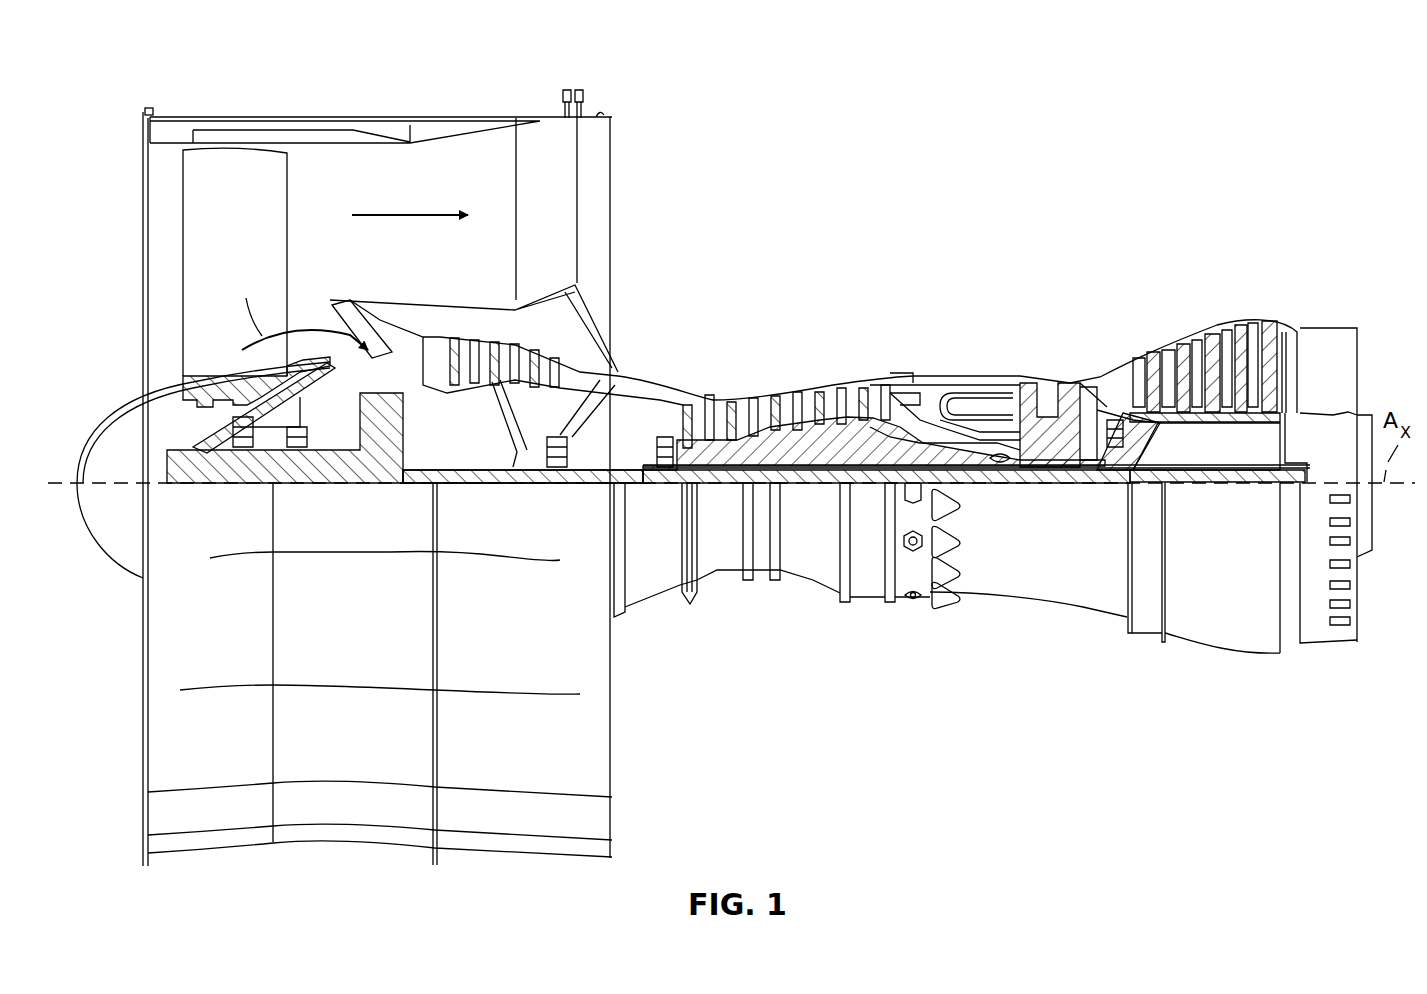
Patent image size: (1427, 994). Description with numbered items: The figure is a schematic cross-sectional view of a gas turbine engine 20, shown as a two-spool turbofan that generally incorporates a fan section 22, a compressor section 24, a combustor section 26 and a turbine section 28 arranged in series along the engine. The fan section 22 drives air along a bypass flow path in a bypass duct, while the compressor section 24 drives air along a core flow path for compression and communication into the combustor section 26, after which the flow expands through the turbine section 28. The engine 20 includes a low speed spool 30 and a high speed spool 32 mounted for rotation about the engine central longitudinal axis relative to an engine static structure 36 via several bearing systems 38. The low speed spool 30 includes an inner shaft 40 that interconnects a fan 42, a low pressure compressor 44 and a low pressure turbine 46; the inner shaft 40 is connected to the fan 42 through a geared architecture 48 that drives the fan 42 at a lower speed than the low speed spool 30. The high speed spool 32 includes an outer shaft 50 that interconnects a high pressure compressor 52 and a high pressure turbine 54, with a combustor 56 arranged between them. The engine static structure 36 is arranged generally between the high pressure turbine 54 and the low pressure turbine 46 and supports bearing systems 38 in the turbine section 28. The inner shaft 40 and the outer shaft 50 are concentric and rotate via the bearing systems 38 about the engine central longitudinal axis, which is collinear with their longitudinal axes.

The gas turbine engine 20 is at (1243, 86).
The fan section 22 is at (366, 110).
The compressor section 24 is at (796, 305).
The combustor section 26 is at (958, 322).
The turbine section 28 is at (1108, 304).
The low speed spool 30 is at (830, 488).
The high speed spool 32 is at (890, 438).
The engine static structure 36 is at (870, 600).
The bearing systems 38 is at (240, 450).
The inner shaft 40 is at (630, 487).
The fan 42 is at (240, 235).
The low pressure compressor 44 is at (525, 360).
The low pressure turbine 46 is at (1212, 345).
The geared architecture 48 is at (380, 455).
The outer shaft 50 is at (1000, 466).
The high pressure compressor 52 is at (762, 410).
The high pressure turbine 54 is at (1048, 385).
The combustor 56 is at (965, 405).